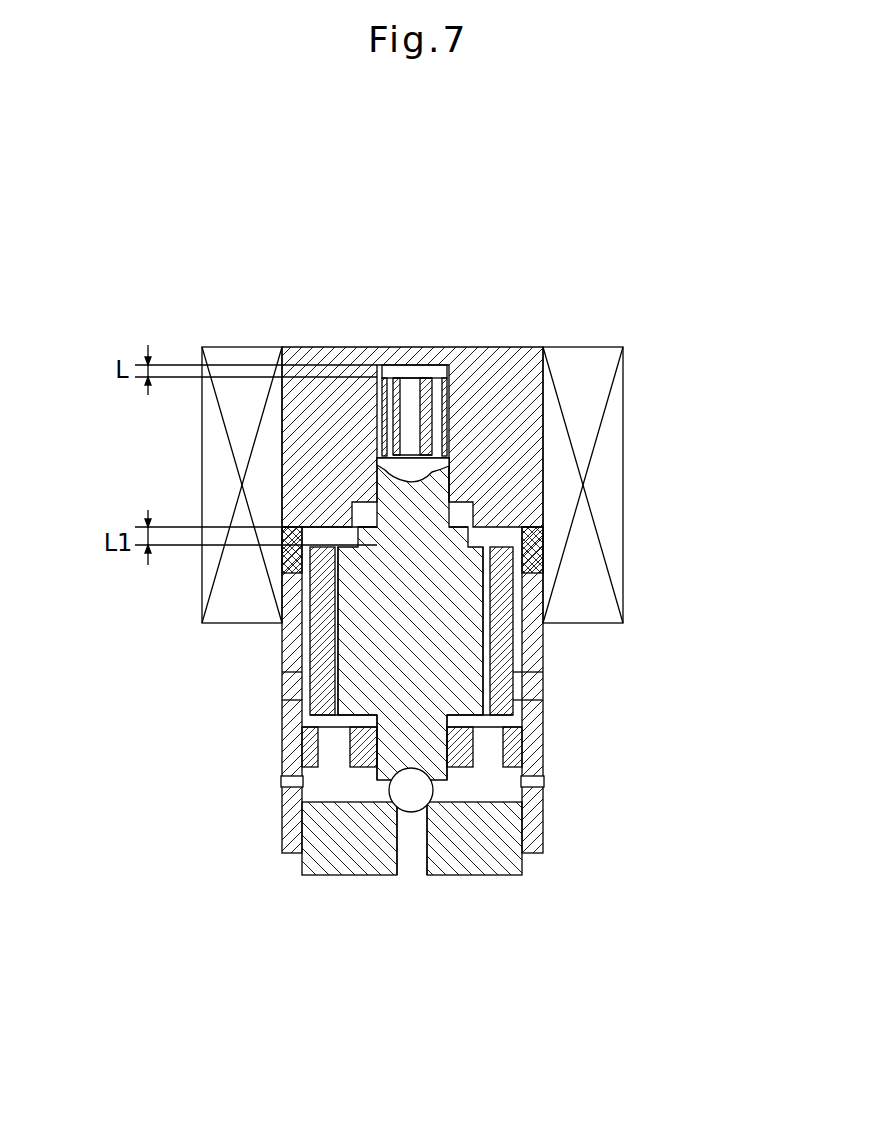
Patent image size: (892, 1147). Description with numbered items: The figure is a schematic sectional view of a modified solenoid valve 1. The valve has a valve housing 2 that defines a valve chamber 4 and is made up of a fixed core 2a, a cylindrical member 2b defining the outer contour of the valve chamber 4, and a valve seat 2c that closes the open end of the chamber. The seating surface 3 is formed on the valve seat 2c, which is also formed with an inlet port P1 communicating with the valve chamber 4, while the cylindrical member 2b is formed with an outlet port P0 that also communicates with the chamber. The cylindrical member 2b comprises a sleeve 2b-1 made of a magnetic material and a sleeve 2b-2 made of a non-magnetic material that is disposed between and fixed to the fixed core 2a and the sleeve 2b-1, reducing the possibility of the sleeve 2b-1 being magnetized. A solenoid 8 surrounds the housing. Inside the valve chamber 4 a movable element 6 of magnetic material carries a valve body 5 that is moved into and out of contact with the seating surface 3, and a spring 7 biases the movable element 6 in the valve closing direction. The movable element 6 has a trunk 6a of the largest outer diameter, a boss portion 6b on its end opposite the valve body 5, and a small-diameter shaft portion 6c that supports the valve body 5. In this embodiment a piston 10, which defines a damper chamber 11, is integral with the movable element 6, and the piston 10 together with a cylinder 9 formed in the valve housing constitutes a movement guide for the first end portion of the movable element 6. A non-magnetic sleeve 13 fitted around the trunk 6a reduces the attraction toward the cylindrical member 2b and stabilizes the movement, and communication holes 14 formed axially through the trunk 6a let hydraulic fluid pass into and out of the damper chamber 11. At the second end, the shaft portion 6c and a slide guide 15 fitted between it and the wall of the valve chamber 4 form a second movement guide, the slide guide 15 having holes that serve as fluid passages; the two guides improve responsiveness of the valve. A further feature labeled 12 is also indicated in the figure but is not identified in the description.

The solenoid valve 1 is at (647, 345).
The valve housing 2 is at (282, 752).
The fixed core 2a is at (507, 346).
The cylindrical member 2b is at (485, 690).
The sleeve 2b-1 is at (522, 583).
The sleeve 2b-2 is at (522, 546).
The valve seat 2c is at (425, 886).
The seating surface 3 is at (450, 855).
The valve chamber 4 is at (525, 516).
The valve body 5 is at (395, 803).
The movable element 6 is at (355, 668).
The trunk 6a is at (535, 630).
The boss portion 6b is at (362, 503).
The small-diameter shaft portion 6c is at (372, 772).
The spring 7 is at (392, 364).
The solenoid 8 is at (226, 336).
The cylinder 9 is at (448, 364).
The piston 10 is at (410, 470).
The damper chamber 11 is at (413, 364).
The bore opening 12 is at (467, 483).
The non-magnetic sleeve 13 is at (545, 700).
The communication holes 14 is at (545, 672).
The slide guide 15 is at (545, 745).
The outlet port P0 is at (282, 777).
The inlet port P1 is at (410, 865).